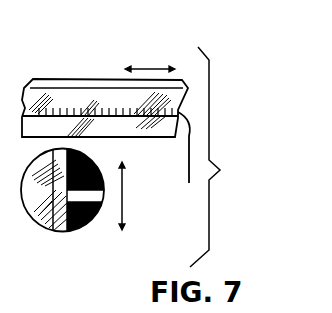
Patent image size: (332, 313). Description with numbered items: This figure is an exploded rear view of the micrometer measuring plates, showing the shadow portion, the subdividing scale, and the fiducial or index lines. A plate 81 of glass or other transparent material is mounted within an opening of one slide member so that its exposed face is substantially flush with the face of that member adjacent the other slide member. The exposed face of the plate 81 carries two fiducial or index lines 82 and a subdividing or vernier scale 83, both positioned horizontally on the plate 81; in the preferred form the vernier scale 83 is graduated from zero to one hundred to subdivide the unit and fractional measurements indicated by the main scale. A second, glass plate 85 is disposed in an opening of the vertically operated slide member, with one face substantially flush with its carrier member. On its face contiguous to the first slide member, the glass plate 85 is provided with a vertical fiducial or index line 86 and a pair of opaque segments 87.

The plate 81 is at (70, 97).
The fiducial or index lines 82 is at (143, 115).
The subdividing or vernier scale 83 is at (184, 159).
The glass plate 85 is at (60, 218).
The vertical fiducial or index line 86 is at (37, 218).
The opaque segments 87 is at (83, 223).